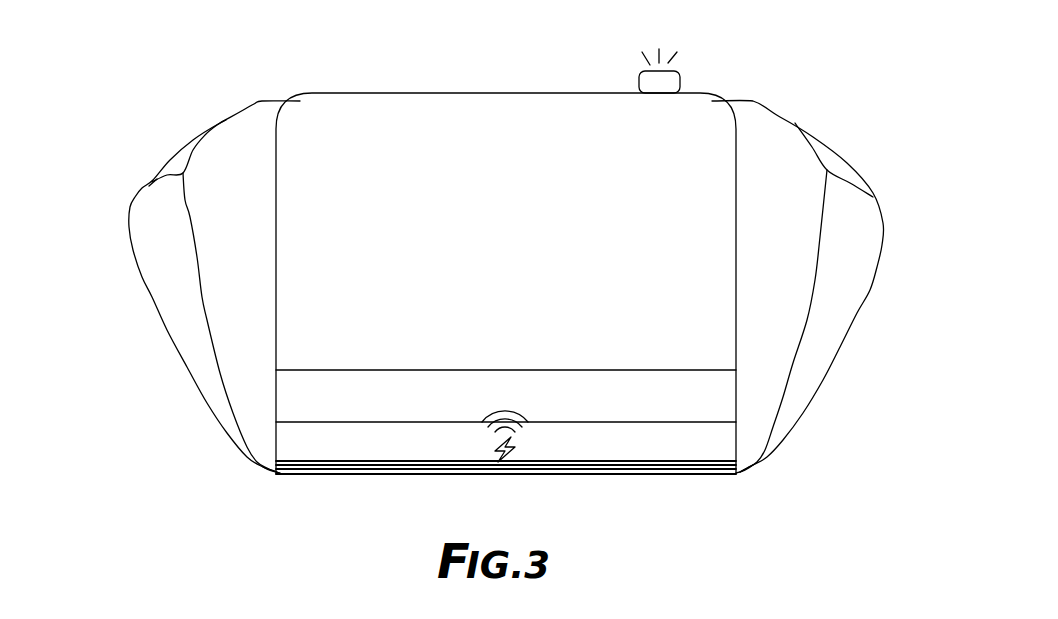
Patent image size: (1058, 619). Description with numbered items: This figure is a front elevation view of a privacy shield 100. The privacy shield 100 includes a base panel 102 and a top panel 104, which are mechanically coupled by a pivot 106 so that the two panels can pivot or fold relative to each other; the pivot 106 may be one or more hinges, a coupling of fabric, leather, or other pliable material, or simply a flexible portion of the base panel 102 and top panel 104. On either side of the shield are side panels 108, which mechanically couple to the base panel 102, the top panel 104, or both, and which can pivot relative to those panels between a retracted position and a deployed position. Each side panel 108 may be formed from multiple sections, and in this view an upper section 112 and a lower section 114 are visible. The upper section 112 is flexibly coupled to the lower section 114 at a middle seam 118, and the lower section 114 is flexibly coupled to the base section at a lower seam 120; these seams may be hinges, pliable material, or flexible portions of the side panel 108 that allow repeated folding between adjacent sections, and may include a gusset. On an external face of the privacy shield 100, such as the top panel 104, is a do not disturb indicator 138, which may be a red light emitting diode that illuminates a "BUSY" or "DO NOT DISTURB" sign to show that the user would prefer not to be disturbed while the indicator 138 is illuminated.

The privacy shield 100 is at (157, 108).
The base panel 102 is at (642, 476).
The top panel 104 is at (395, 91).
The pivot 106 is at (720, 463).
The side panels 108 is at (257, 98).
The upper section 112 is at (173, 170).
The lower section 114 is at (157, 277).
The middle seam 118 is at (152, 183).
The lower seam 120 is at (256, 470).
The do not disturb indicator 138 is at (682, 80).